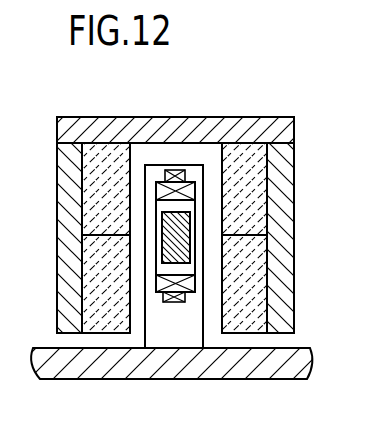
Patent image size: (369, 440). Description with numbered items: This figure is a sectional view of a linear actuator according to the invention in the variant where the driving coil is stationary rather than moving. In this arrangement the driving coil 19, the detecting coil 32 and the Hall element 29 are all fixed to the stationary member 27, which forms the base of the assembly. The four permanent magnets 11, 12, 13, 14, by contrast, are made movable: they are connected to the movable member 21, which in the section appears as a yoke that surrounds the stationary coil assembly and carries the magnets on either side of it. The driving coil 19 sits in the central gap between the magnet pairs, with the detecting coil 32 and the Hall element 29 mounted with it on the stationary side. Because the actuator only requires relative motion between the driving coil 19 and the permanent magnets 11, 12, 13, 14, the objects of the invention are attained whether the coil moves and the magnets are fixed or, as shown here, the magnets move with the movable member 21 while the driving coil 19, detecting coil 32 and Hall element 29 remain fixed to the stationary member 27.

The permanent magnet 11 is at (269, 208).
The permanent magnet 12 is at (269, 264).
The permanent magnet 13 is at (82, 212).
The permanent magnet 14 is at (85, 255).
The driving coil 19 is at (160, 300).
The movable member 21 is at (167, 128).
The stationary member 27 is at (256, 377).
The Hall element 29 is at (152, 243).
The detecting coil 32 is at (183, 303).